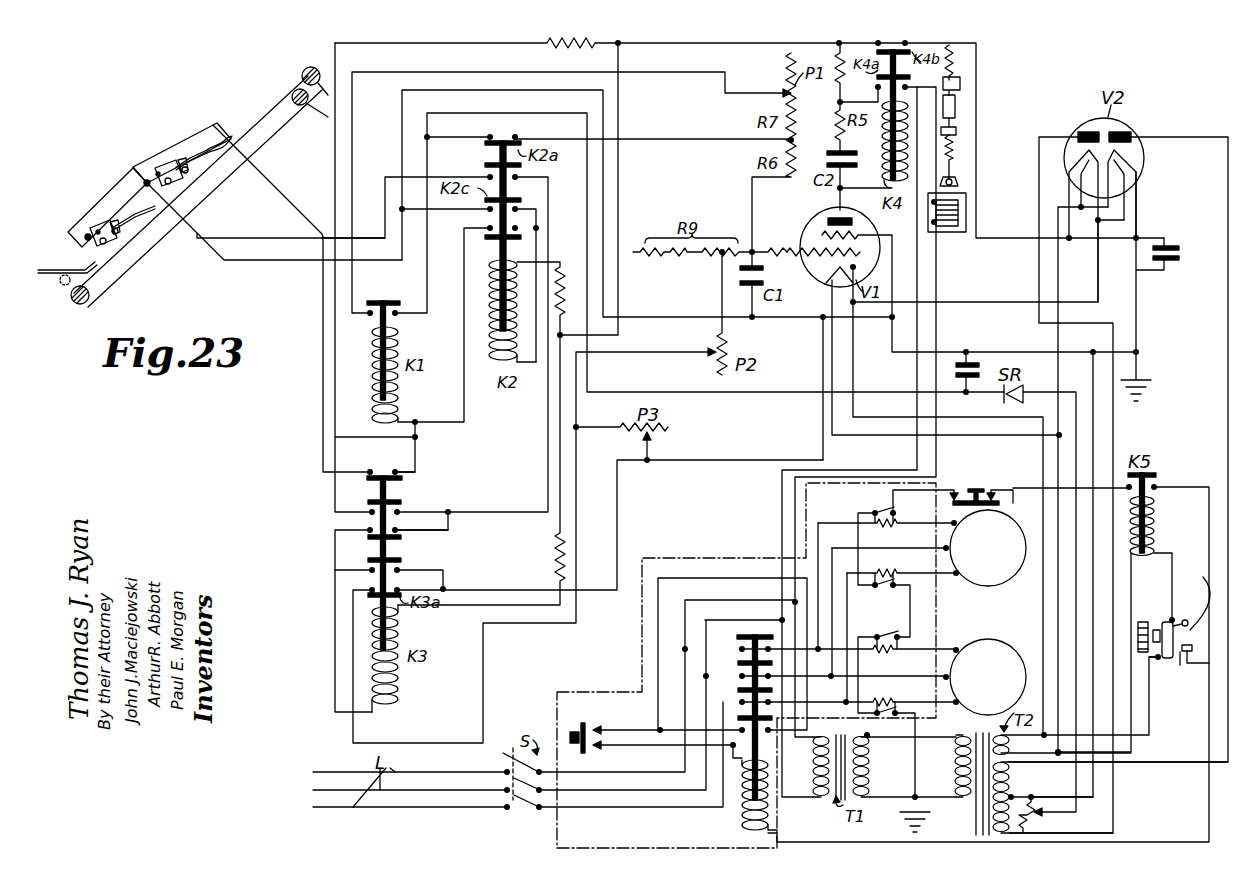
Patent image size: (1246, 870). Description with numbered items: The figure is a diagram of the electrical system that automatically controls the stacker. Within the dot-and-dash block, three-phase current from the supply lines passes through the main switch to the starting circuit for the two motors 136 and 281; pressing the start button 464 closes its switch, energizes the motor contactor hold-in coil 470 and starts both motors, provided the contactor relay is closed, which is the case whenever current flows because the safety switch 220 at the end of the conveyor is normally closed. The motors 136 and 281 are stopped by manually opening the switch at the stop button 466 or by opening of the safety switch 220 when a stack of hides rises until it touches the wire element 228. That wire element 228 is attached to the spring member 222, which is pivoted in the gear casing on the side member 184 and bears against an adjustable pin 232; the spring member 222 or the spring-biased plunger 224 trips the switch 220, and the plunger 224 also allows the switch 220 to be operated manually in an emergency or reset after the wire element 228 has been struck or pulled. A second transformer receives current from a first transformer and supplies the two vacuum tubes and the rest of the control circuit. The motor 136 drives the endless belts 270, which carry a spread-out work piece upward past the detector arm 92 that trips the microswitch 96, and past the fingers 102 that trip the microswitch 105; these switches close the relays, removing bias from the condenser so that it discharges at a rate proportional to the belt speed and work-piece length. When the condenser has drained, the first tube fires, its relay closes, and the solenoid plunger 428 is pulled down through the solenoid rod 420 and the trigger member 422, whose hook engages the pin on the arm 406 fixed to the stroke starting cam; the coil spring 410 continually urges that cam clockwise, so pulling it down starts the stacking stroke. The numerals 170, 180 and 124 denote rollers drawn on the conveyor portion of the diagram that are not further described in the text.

The roller 170 is at (308, 67).
The roller 180 is at (300, 105).
The curved arm 92 is at (217, 138).
The microswitch 96 is at (157, 165).
The fingers 102 is at (127, 225).
The microswitch 105 is at (84, 253).
The endless belts 270 is at (135, 248).
The roller 124 is at (80, 304).
The coil spring 410 is at (953, 70).
The arm 406 is at (958, 83).
The trigger member 422 is at (955, 93).
The solenoid rod 420 is at (955, 121).
The plunger 428 is at (954, 178).
The stop button 466 is at (974, 488).
The motor 136 is at (1001, 580).
The motor 281 is at (994, 652).
The spring member 222 is at (1191, 597).
The plunger 224 is at (1138, 627).
The side member 184 is at (1160, 618).
The adjustable pin 232 is at (1186, 652).
The wire element 228 is at (1181, 664).
The microswitch 220 is at (1205, 664).
The start button 464 is at (585, 728).
The motor contactor hold-in coil 470 is at (742, 823).